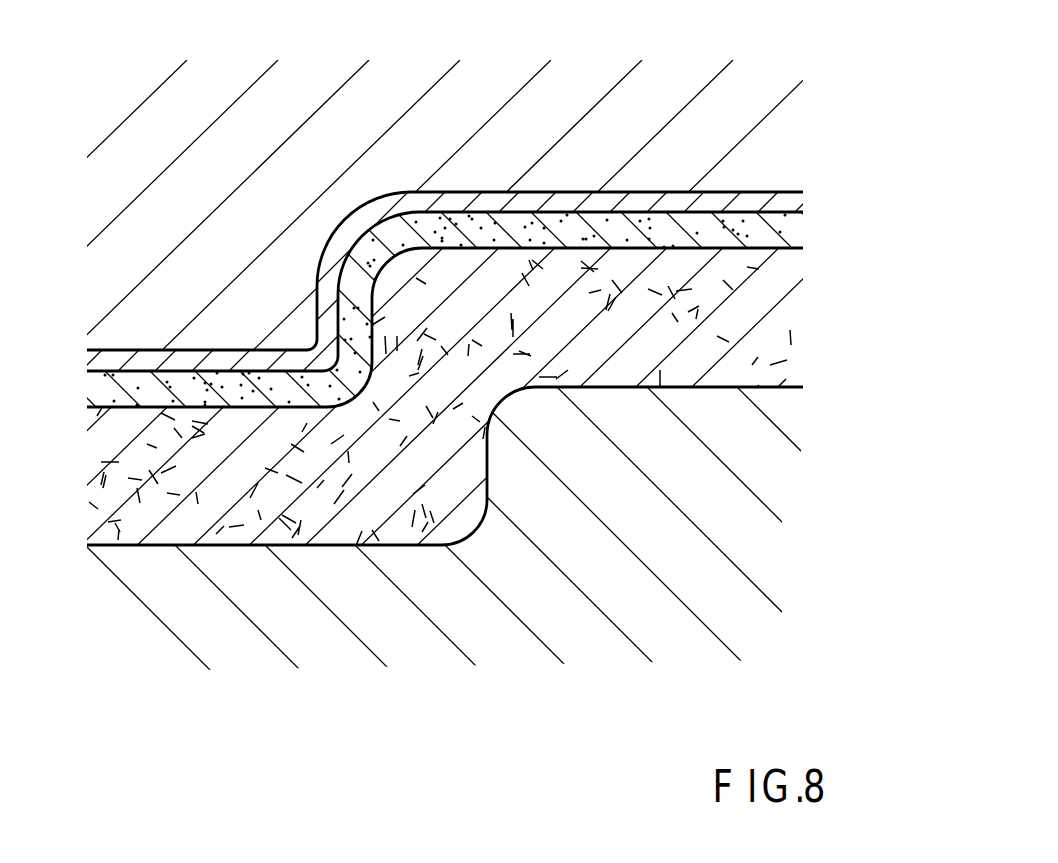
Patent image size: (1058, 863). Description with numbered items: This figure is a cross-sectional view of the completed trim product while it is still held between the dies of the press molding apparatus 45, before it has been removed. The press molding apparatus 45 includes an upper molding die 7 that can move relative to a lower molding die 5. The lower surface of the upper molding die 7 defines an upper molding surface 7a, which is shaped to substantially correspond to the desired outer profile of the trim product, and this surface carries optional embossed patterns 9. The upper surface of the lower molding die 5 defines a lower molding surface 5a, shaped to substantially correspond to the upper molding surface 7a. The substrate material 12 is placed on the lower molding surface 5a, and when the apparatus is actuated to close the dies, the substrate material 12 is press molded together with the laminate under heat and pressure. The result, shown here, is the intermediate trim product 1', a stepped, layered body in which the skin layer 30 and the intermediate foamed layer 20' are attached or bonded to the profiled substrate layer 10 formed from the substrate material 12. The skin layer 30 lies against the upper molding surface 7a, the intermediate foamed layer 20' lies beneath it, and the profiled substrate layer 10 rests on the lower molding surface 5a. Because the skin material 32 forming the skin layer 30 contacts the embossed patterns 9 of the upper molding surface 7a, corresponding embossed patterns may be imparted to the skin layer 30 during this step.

The upper molding die 7 is at (411, 56).
The upper molding surface 7a is at (602, 192).
The embossed patterns 9 is at (706, 192).
The intermediate trim product 1' is at (594, 237).
The intermediate foamed layer 20' is at (503, 310).
The skin layer 30 is at (85, 358).
The skin material 32 is at (200, 310).
The profiled substrate layer 10 is at (84, 500).
The substrate material 12 is at (434, 451).
The lower molding surface 5a is at (340, 545).
The lower molding die 5 is at (499, 657).
The press molding apparatus 45 is at (533, 688).